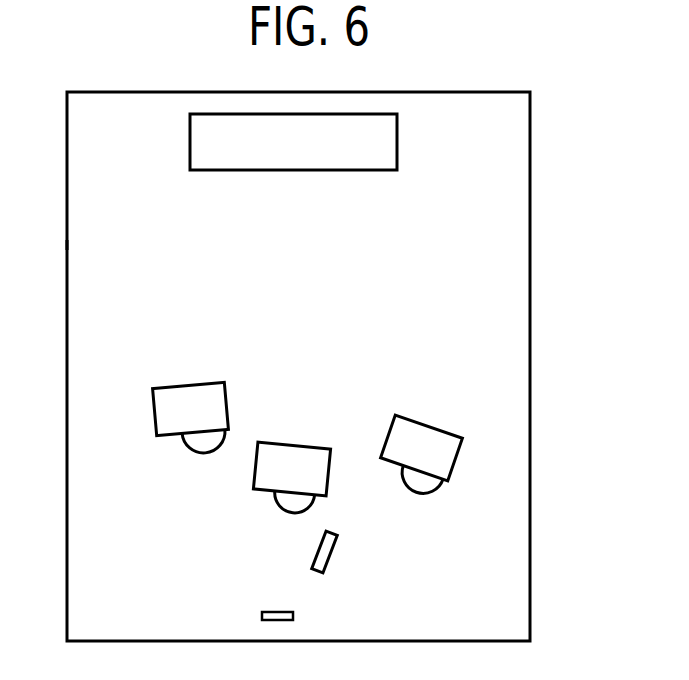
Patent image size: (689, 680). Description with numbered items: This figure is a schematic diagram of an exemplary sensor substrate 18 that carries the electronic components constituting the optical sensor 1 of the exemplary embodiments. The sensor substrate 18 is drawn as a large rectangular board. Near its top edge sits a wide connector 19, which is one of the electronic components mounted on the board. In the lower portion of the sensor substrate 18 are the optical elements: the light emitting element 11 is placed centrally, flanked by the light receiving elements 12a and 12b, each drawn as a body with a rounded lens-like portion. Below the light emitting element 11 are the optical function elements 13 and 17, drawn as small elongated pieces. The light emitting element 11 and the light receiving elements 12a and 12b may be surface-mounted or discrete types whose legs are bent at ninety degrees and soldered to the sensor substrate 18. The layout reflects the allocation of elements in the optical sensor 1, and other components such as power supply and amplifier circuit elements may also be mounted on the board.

The optical sensor 1 is at (556, 163).
The light emitting element 11 is at (305, 452).
The light receiving element 12a is at (192, 393).
The light receiving element 12b is at (425, 430).
The optical function element 13 is at (331, 558).
The optical function element 17 is at (270, 611).
The sensor substrate 18 is at (66, 246).
The connector 19 is at (397, 151).